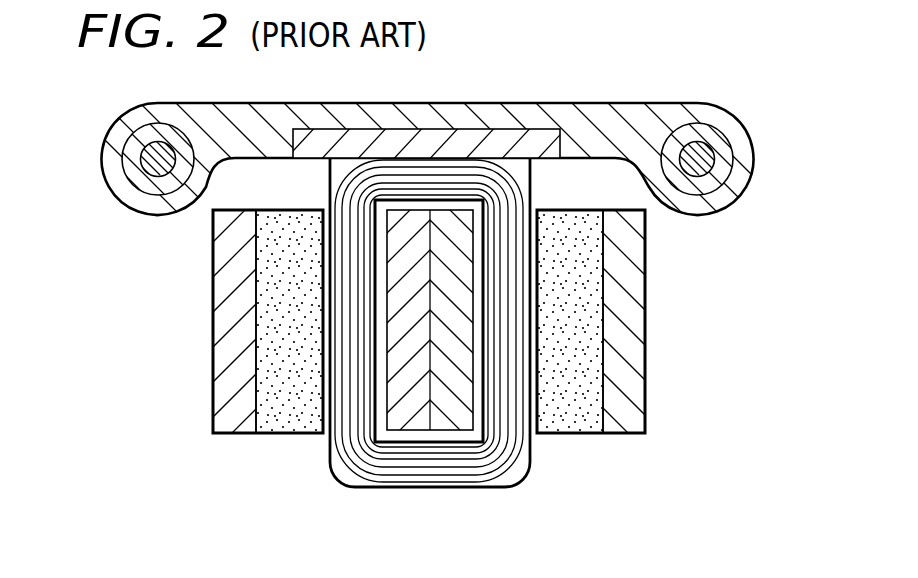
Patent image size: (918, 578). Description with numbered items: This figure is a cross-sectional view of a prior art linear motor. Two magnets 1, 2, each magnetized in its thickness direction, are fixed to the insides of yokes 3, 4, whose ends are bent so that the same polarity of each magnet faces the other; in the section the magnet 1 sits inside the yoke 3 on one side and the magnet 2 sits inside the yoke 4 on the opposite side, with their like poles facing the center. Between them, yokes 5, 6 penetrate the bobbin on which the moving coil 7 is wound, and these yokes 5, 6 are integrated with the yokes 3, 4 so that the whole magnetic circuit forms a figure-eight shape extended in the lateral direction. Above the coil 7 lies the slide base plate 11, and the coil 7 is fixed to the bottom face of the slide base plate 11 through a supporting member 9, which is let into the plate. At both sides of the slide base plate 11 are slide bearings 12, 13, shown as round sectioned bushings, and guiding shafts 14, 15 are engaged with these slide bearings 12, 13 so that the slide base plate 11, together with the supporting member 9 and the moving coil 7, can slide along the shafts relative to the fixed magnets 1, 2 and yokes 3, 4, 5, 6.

The magnet 1 is at (282, 420).
The magnet 2 is at (580, 420).
The yoke 3 is at (222, 289).
The yoke 4 is at (633, 300).
The yoke 5 is at (407, 417).
The yoke 6 is at (450, 420).
The moving coil 7 is at (497, 462).
The supporting member 9 is at (487, 140).
The slide base plate 11 is at (638, 110).
The slide bearing 12 is at (140, 142).
The slide bearing 13 is at (717, 138).
The guiding shaft 14 is at (145, 188).
The guiding shaft 15 is at (713, 158).